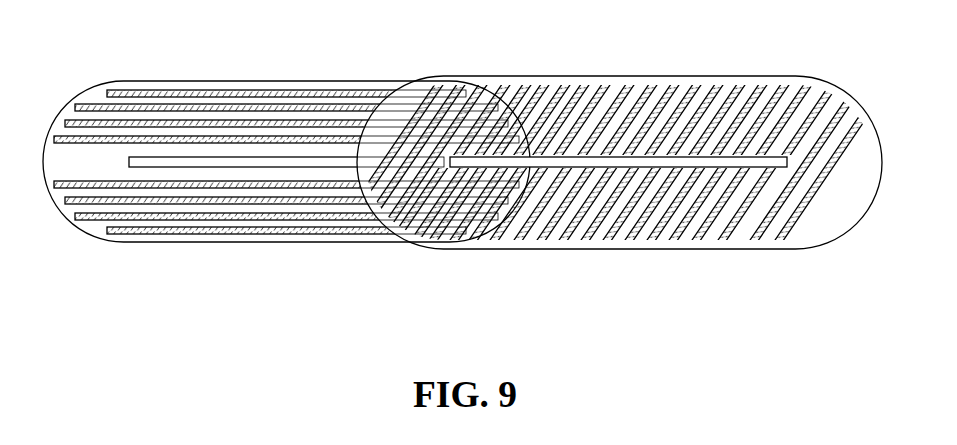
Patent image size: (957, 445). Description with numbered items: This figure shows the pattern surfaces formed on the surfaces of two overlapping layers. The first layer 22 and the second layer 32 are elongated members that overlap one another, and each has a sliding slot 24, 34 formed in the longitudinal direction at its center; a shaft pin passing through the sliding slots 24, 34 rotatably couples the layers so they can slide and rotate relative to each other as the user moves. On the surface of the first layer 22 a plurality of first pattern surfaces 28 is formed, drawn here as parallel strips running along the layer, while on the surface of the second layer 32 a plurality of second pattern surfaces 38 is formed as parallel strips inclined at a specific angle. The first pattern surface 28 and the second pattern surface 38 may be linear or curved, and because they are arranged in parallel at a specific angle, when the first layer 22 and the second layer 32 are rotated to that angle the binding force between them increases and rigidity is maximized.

The first layer 22 is at (208, 80).
The first pattern surface 28 is at (286, 108).
The sliding slot 24 is at (245, 165).
The second layer 32 is at (662, 78).
The second pattern surface 38 is at (566, 229).
The sliding slot 34 is at (735, 165).